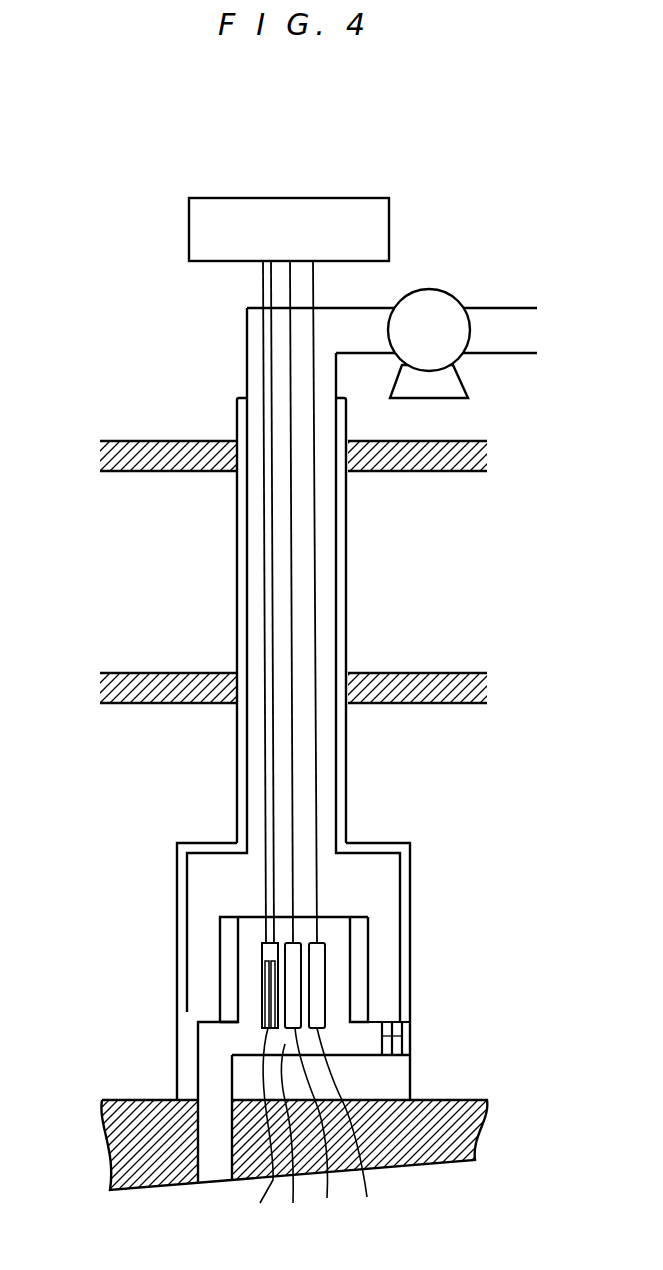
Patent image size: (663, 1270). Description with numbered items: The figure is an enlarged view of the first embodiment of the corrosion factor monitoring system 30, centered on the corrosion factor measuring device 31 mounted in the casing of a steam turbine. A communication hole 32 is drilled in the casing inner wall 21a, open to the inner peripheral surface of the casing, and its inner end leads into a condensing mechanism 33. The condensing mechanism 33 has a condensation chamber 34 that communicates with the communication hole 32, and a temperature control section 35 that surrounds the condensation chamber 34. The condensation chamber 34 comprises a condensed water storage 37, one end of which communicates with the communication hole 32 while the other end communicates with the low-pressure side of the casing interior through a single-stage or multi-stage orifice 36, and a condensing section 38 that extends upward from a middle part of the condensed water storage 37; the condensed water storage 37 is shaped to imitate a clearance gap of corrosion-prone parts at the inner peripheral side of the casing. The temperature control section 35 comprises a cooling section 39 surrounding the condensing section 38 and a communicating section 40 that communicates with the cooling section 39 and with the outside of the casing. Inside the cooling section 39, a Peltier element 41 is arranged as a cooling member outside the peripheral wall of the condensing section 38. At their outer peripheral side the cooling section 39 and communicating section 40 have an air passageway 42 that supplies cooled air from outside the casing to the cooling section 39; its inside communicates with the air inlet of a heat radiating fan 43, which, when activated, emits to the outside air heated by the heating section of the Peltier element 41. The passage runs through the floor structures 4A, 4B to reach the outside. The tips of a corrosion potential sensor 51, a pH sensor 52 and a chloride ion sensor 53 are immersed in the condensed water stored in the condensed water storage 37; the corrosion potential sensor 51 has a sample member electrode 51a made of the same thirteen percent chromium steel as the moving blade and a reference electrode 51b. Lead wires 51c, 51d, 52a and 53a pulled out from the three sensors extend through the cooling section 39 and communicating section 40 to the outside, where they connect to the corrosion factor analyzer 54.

The corrosion detection system 30 is at (173, 201).
The corrosion factor analyzer 54 is at (318, 198).
The heat radiating fan 43 is at (430, 296).
The floor slab 4A is at (138, 432).
The floor slab 4B is at (295, 688).
The corrosion factor measuring device 31 is at (145, 832).
The temperature control section 35 is at (458, 758).
The communicating section 40 is at (348, 778).
The cooling section 39 is at (357, 877).
The air passageway 42 is at (182, 877).
The condensing mechanism 33 is at (166, 917).
The condensing section 38 is at (340, 945).
The Peltier element 41 is at (360, 975).
The orifice 36 is at (405, 1030).
The condensation chamber 34 is at (362, 1062).
The communication hole 32 is at (217, 1160).
The corrosion potential sensor 51 is at (198, 748).
The sample member electrode 51a is at (265, 975).
The reference electrode 51b is at (272, 1000).
The lead wire 51c is at (264, 517).
The lead wire 51d is at (273, 550).
The condensed water storage 37 is at (292, 1139).
The pH sensor 52 is at (347, 745).
The lead wire 52a is at (292, 594).
The chloride ion sensor 53 is at (364, 744).
The lead wire 53a is at (316, 546).
The inner wall of the casing 21a is at (118, 1135).